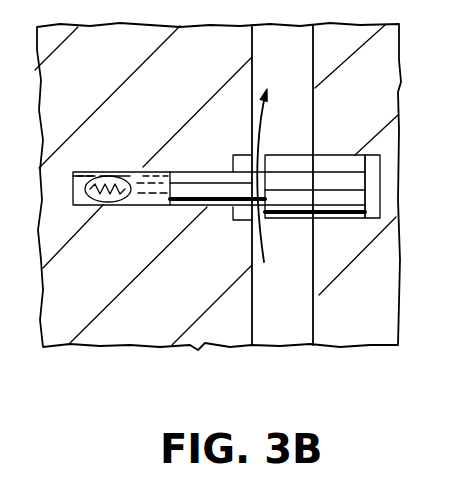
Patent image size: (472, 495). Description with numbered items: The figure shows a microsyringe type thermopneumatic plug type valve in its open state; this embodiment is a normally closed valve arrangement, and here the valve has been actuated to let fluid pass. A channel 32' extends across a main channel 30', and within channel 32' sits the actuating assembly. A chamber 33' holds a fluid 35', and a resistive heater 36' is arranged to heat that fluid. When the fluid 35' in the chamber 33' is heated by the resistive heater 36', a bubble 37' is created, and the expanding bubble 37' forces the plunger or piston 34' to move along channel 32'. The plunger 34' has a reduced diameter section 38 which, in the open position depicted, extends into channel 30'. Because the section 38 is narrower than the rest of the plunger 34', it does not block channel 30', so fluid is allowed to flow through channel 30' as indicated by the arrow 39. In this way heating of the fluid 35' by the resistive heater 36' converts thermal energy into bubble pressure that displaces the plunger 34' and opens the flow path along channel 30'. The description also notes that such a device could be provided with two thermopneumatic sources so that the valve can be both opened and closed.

The channel 30' is at (218, 186).
The channel 32' is at (319, 196).
The chamber 33' is at (122, 163).
The plunger or piston 34' is at (322, 156).
The fluid 35' is at (74, 131).
The resistive heater 36' is at (87, 209).
The bubble 37' is at (138, 128).
The reduced diameter section 38 is at (198, 172).
The arrow 39 is at (274, 120).